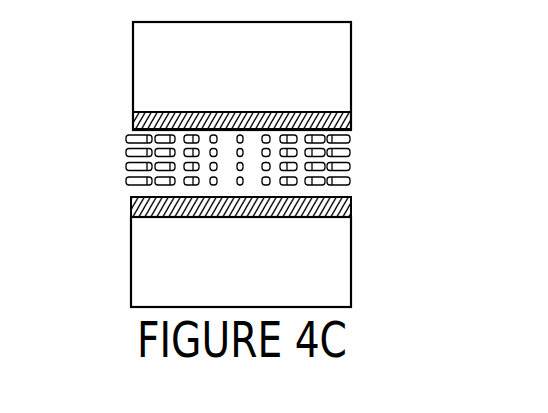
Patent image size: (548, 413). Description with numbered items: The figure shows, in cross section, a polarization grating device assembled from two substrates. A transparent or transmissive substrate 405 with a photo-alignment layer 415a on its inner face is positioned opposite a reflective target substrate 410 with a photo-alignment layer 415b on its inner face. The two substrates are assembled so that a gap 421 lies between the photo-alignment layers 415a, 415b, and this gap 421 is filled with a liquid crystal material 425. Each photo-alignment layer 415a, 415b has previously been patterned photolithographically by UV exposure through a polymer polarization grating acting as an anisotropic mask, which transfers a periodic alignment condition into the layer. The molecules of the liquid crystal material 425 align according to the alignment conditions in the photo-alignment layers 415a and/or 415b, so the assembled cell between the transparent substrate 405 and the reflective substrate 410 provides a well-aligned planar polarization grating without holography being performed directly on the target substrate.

The transparent substrate 405 is at (220, 107).
The target substrate 410 is at (220, 299).
The photo-alignment layer 415a is at (351, 122).
The photo-alignment layer 415b is at (351, 207).
The gap 421 is at (243, 157).
The liquid crystal material 425 is at (350, 160).